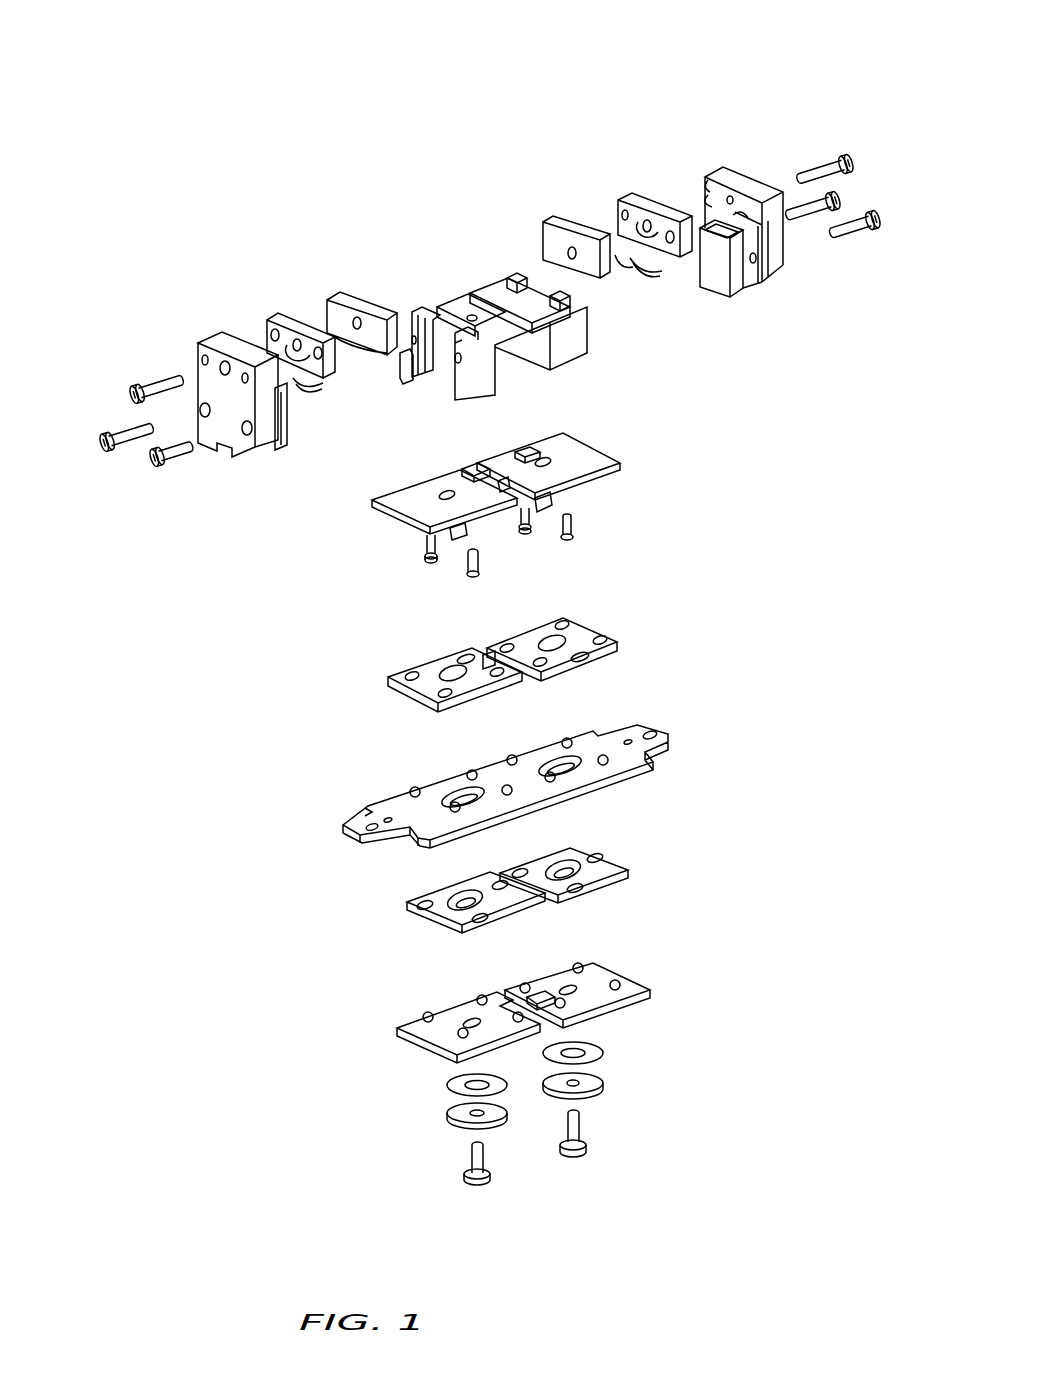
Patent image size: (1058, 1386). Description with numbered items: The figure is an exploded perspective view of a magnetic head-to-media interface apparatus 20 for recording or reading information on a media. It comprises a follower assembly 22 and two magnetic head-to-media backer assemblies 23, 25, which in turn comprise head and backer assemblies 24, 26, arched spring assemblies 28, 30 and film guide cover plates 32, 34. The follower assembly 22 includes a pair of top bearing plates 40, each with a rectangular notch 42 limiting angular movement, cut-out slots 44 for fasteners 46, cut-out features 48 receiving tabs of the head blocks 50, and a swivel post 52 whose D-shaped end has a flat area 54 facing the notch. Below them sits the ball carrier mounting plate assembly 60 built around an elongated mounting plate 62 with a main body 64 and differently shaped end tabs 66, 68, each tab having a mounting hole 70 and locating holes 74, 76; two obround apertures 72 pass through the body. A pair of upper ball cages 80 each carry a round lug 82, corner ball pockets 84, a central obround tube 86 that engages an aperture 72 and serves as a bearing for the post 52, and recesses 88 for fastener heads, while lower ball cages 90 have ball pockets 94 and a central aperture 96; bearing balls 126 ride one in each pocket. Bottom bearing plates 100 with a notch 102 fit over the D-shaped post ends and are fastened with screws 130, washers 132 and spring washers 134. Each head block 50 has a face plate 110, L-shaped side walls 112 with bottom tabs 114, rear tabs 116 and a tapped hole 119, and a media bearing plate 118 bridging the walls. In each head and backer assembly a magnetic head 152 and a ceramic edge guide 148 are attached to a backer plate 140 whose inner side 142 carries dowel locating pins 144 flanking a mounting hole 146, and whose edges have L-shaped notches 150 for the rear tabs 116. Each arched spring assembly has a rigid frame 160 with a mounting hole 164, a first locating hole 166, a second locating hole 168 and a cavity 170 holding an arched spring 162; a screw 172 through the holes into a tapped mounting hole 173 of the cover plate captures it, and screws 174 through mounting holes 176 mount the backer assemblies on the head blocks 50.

The magnetic head-to-media interface apparatus 20 is at (97, 1185).
The follower assembly 22 is at (742, 423).
The magnetic head-to-media backer assembly 23 is at (512, 45).
The head and backer assembly 24 is at (670, 82).
The magnetic head-to-media backer assembly 25 is at (140, 150).
The head and backer assembly 26 is at (187, 273).
The arched spring assembly 28 is at (592, 120).
The arched spring assembly 30 is at (247, 208).
The film guide cover plate 32 is at (550, 232).
The film guide cover plate 34 is at (353, 300).
The top bearing plate 40 is at (600, 444).
The notch 42 is at (457, 477).
The cut-out slots 44 is at (427, 483).
The fasteners 46 is at (577, 522).
The cut-out features 48 is at (512, 455).
The head block 50 is at (442, 318).
The swivel post 52 is at (557, 495).
The flat area 54 is at (533, 523).
The ball carrier mounting plate assembly 60 is at (268, 632).
The mounting plate 62 is at (627, 782).
The main body 64 is at (577, 778).
The end tab 66 is at (353, 838).
The end tab 68 is at (670, 743).
The mounting hole 70 is at (653, 730).
The apertures 72 is at (460, 790).
The locating hole 74 is at (650, 778).
The locating hole 76 is at (392, 838).
The upper ball cage 80 is at (593, 620).
The round lug 82 is at (488, 652).
The ball pockets 84 is at (600, 645).
The cylindrical tube 86 is at (562, 630).
The recesses 88 is at (545, 640).
The lower ball cage 90 is at (627, 868).
The ball pockets 94 is at (627, 883).
The aperture 96 is at (460, 902).
The bottom bearing plate 100 is at (613, 1010).
The notch 102 is at (540, 977).
The face plate 110 is at (537, 352).
The side walls 112 is at (580, 357).
The bottom tabs 114 is at (570, 378).
The rear tabs 116 is at (587, 337).
The media bearing plate 118 is at (488, 290).
The tapped hole 119 is at (400, 310).
The bearing balls 126 is at (633, 978).
The screws 130 is at (470, 1162).
The washers 132 is at (453, 1122).
The spring washers 134 is at (448, 1085).
The backer plate 140 is at (785, 232).
The inner side 142 is at (706, 200).
The dowel locating pins 144 is at (712, 185).
The mounting hole 146 is at (733, 196).
The ceramic edge guide 148 is at (787, 240).
The L-shaped notches 150 is at (773, 283).
The magnetic head 152 is at (717, 280).
The rigid frame 160 is at (347, 385).
The arched spring 162 is at (310, 397).
The mounting hole 164 is at (642, 200).
The first locating hole 166 is at (680, 258).
The second locating hole 168 is at (622, 212).
The cavity 170 is at (620, 265).
The screw 172 is at (167, 378).
The tapped mounting hole 173 is at (320, 320).
The screws 174 is at (120, 428).
The mounting holes 176 is at (205, 355).